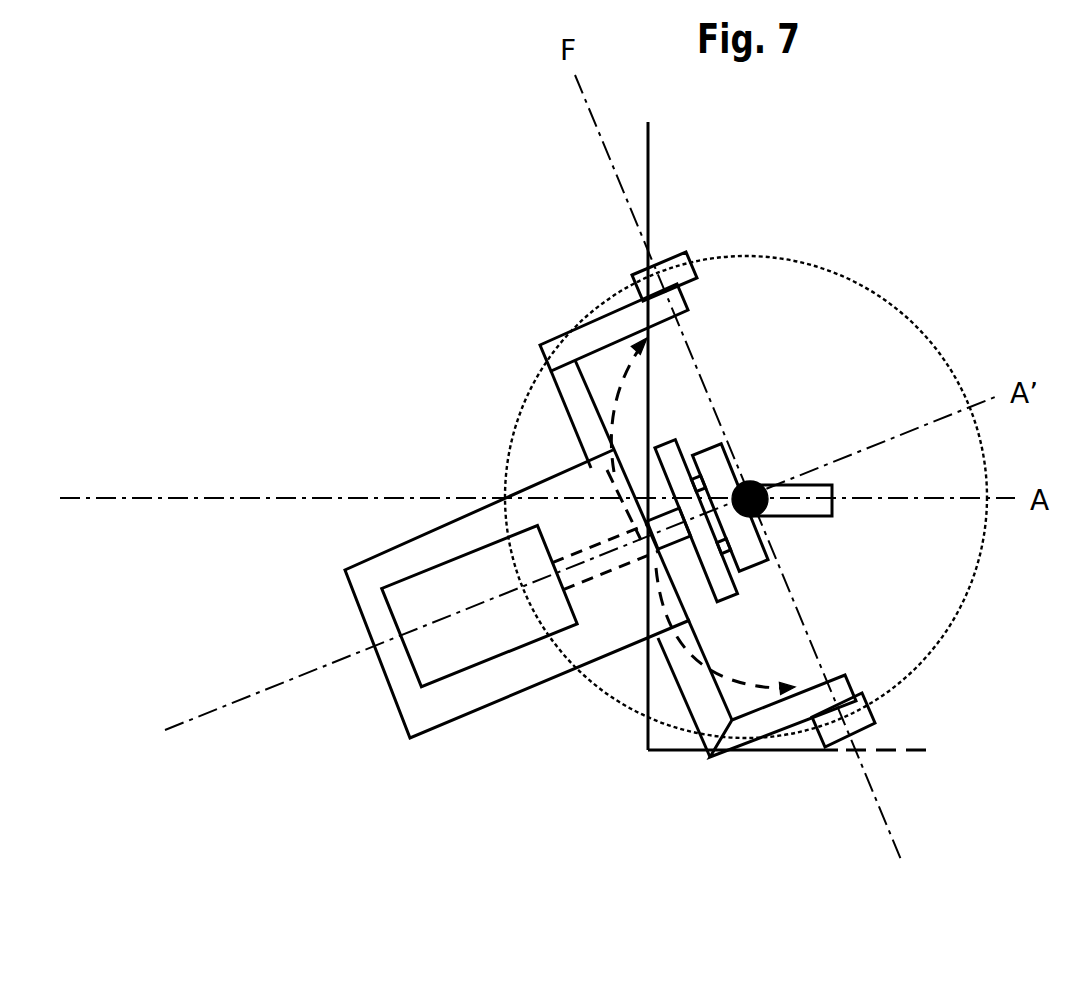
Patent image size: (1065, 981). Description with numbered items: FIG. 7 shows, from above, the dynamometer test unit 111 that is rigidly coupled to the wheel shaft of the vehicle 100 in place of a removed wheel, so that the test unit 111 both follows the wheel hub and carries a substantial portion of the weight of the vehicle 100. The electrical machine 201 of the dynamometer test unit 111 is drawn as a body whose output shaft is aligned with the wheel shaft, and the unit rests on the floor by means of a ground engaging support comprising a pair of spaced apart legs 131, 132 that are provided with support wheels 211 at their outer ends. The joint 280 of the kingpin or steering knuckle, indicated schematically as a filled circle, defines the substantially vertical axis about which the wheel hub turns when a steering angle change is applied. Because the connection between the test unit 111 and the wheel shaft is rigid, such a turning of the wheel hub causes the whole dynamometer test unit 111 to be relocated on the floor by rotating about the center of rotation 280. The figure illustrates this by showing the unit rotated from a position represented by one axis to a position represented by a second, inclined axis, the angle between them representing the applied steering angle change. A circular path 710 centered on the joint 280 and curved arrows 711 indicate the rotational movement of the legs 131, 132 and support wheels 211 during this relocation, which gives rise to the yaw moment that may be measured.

The vehicle 100 is at (830, 758).
The dynamometer test unit 111 is at (487, 712).
The leg 131 is at (730, 738).
The leg 132 is at (552, 355).
The electrical machine 201 is at (430, 593).
The support wheels 211 is at (642, 277).
The joint 280 is at (753, 483).
The circular path of pivot 710 is at (942, 355).
The rotation direction arrows 711 is at (770, 668).